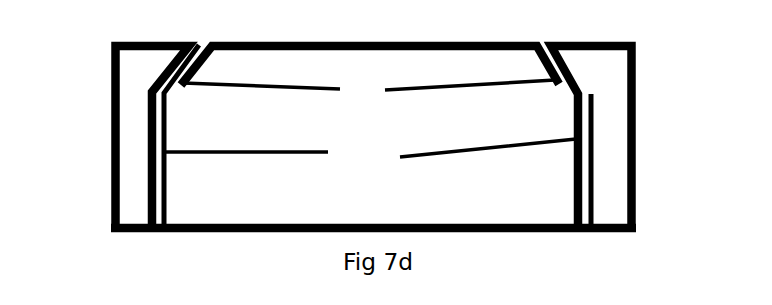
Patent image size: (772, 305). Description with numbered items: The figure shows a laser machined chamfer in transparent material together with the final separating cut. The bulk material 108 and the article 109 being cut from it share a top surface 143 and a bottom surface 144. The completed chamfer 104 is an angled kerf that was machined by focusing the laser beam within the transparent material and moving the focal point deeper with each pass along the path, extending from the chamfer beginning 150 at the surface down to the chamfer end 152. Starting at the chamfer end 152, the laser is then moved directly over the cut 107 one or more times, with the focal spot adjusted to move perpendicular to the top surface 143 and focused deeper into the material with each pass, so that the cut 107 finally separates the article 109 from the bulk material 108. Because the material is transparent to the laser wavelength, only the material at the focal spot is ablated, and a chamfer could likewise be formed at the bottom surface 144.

The completed chamfer 104 is at (369, 90).
The cut 107 is at (371, 153).
The bulk material 108 is at (113, 92).
The article 109 is at (270, 192).
The top surface 143 is at (468, 42).
The bottom surface 144 is at (510, 232).
The chamfer beginning 150 is at (545, 42).
The chamfer end 152 is at (592, 92).